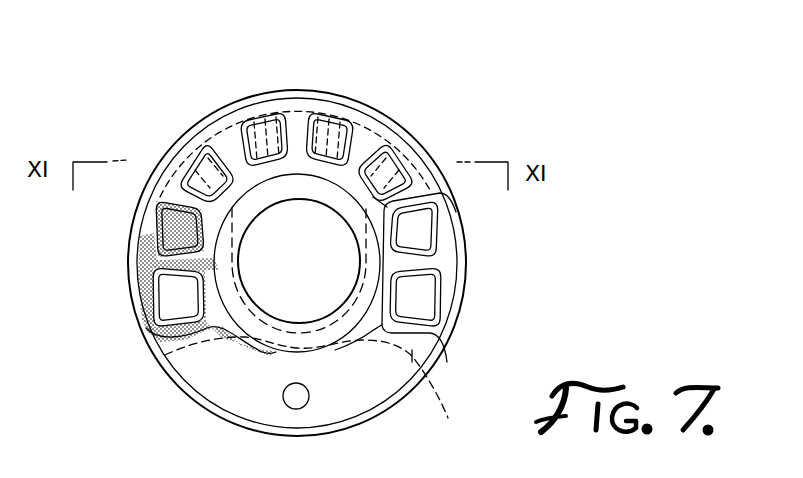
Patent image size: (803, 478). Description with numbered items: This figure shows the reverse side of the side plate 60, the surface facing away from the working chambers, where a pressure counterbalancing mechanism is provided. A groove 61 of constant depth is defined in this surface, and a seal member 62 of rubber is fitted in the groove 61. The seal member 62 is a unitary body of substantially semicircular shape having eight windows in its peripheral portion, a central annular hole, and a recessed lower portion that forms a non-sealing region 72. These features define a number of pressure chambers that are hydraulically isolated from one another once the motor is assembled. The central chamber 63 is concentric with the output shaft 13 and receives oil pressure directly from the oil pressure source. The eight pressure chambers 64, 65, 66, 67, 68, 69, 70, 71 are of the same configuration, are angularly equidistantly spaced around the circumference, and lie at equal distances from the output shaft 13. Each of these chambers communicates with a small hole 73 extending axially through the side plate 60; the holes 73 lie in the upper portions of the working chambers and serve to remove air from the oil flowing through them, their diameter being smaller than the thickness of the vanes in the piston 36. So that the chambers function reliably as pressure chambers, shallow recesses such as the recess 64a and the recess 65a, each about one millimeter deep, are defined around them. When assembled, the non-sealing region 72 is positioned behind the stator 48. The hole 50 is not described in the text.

The output shaft 13 is at (325, 294).
The piston 36 is at (437, 165).
The stator 48 is at (326, 385).
The hole 50 is at (310, 396).
The side plate 60 is at (203, 390).
The groove 61 is at (150, 326).
The seal member 62 is at (150, 302).
The central chamber 63 is at (245, 283).
The pressure chamber 64 is at (196, 316).
The shallow recess 64a is at (153, 290).
The pressure chamber 65 is at (196, 256).
The shallow recess 65a is at (160, 212).
The pressure chamber 66 is at (208, 145).
The pressure chamber 67 is at (266, 130).
The pressure chamber 68 is at (328, 130).
The pressure chamber 69 is at (384, 158).
The pressure chamber 70 is at (431, 242).
The pressure chamber 71 is at (429, 310).
The non-sealing region 72 is at (390, 388).
The small holes 73 is at (212, 148).